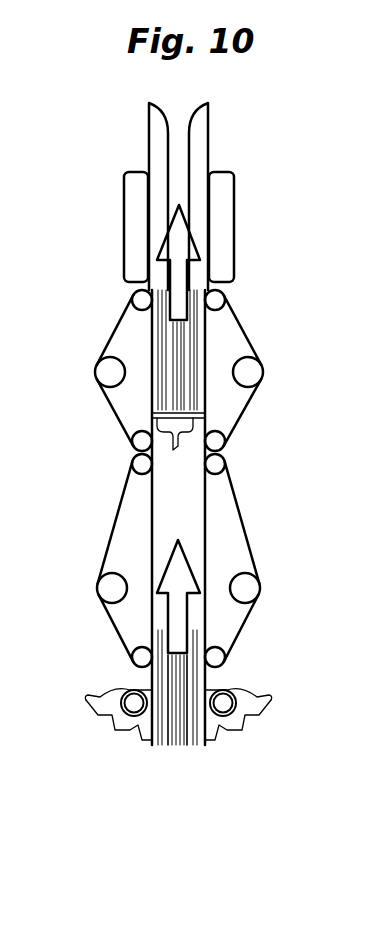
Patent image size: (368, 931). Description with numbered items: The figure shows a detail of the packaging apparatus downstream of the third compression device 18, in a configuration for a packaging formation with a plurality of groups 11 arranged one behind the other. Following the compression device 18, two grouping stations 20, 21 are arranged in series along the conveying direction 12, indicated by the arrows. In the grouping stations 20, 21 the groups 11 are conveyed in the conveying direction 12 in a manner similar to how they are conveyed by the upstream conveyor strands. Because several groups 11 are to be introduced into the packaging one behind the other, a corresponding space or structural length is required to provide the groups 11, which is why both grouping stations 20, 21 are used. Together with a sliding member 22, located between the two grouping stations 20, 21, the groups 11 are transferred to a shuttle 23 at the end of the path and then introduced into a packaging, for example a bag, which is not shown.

The shuttle 23 is at (218, 152).
The conveying direction 12 is at (178, 240).
The grouping station 21 is at (248, 317).
The group 11 is at (176, 347).
The sliding member 22 is at (152, 416).
The grouping station 20 is at (250, 498).
The compression device 18 is at (279, 720).